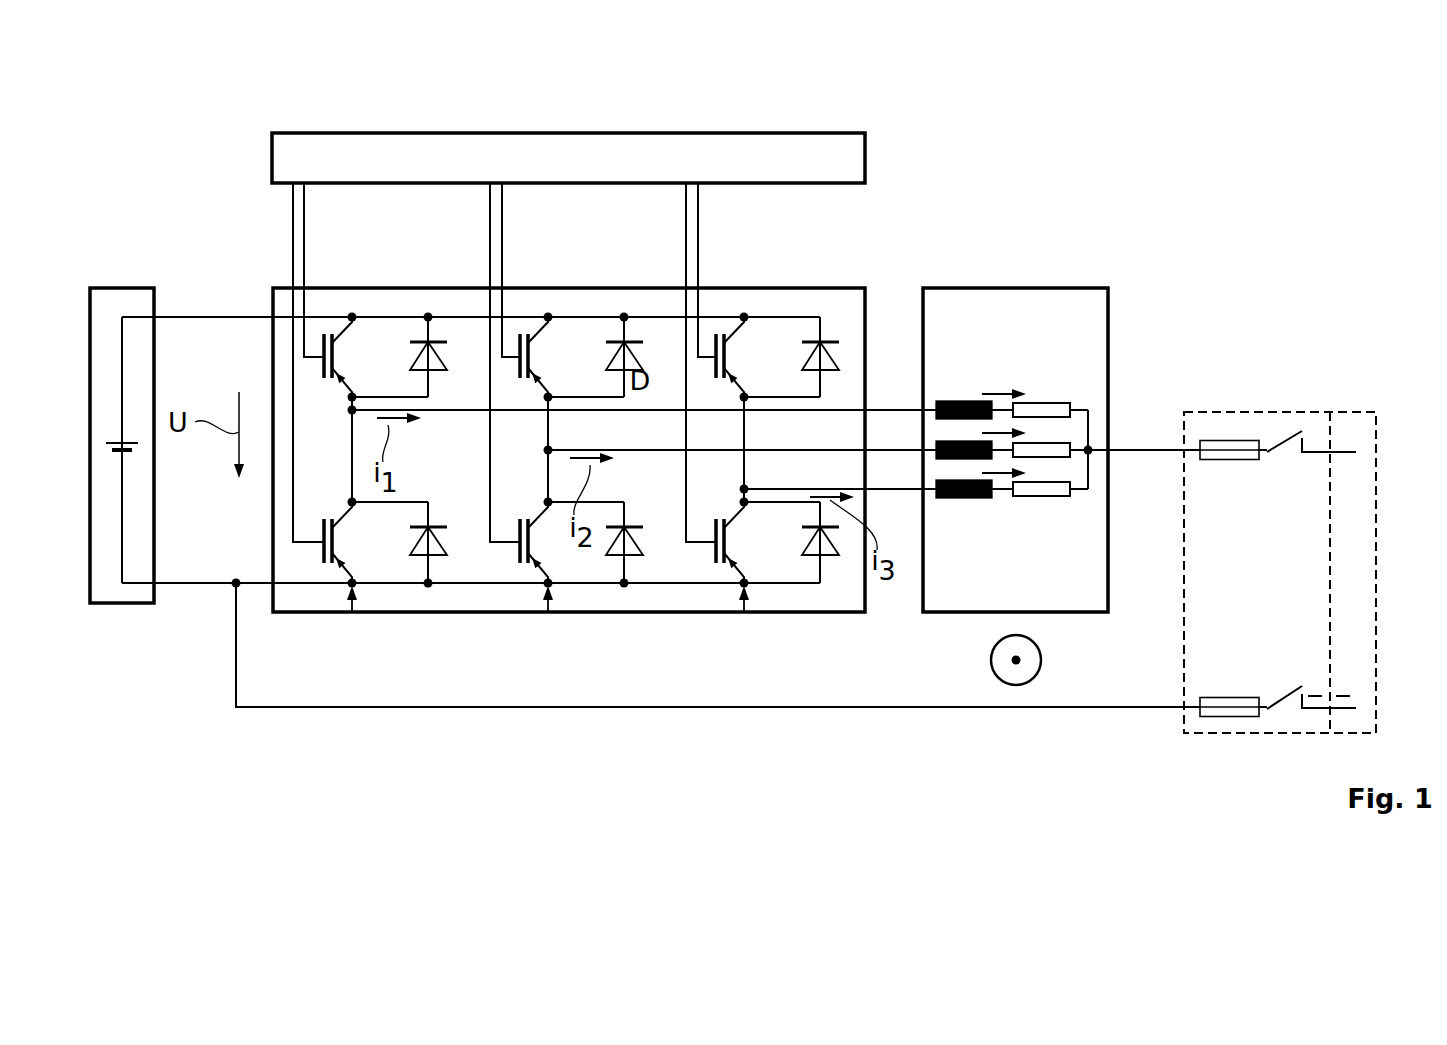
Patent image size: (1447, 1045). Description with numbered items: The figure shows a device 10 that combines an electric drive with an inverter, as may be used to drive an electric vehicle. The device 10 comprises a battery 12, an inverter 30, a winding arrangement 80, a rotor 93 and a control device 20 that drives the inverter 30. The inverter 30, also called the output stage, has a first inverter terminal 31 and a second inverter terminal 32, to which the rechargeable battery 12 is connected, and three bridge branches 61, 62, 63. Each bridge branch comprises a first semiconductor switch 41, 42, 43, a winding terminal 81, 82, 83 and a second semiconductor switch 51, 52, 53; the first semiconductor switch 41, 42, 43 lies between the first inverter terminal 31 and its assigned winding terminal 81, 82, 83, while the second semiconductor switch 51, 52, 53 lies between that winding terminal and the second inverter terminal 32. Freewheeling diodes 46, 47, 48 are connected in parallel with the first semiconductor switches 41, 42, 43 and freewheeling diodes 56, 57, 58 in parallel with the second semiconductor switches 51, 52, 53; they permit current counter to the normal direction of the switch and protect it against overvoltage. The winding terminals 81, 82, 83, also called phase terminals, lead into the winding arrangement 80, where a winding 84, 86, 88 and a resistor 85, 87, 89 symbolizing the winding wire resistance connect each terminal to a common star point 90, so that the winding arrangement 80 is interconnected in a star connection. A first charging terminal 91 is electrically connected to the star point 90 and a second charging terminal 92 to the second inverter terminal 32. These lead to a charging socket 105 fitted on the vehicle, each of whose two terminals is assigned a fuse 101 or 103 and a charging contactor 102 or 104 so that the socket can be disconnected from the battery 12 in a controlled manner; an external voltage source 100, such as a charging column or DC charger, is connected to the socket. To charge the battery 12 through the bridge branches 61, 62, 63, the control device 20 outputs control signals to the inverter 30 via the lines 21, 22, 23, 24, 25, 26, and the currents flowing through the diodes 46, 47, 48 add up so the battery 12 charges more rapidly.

The device 10 is at (172, 158).
The battery 12 is at (122, 603).
The control device 20 is at (568, 133).
The line 21 is at (293, 200).
The line 22 is at (304, 200).
The line 23 is at (490, 200).
The line 24 is at (502, 200).
The line 25 is at (686, 200).
The line 26 is at (698, 200).
The inverter 30 is at (843, 288).
The first inverter terminal 31 is at (193, 317).
The second inverter terminal 32 is at (200, 583).
The first semiconductor switch 41 is at (316, 342).
The first semiconductor switch 42 is at (512, 342).
The first semiconductor switch 43 is at (708, 342).
The freewheeling diode 46 is at (420, 342).
The freewheeling diode 47 is at (616, 342).
The freewheeling diode 48 is at (812, 342).
The second semiconductor switch 51 is at (318, 570).
The second semiconductor switch 52 is at (514, 570).
The second semiconductor switch 53 is at (710, 570).
The freewheeling diode 56 is at (422, 570).
The freewheeling diode 57 is at (618, 570).
The freewheeling diode 58 is at (814, 570).
The bridge branch 61 is at (352, 614).
The bridge branch 62 is at (548, 614).
The bridge branch 63 is at (744, 614).
The winding arrangement 80 is at (1010, 288).
The winding terminal 81 is at (352, 412).
The winding terminal 82 is at (548, 450).
The winding terminal 83 is at (744, 489).
The winding 84 is at (965, 401).
The resistor 85 is at (1045, 403).
The winding 86 is at (940, 445).
The resistor 87 is at (1070, 446).
The winding 88 is at (965, 498).
The resistor 89 is at (1045, 496).
The star point 90 is at (1090, 452).
The first charging terminal 91 is at (1155, 450).
The second charging terminal 92 is at (1122, 707).
The rotor 93 is at (1016, 685).
The voltage source 100 is at (1350, 412).
The fuse 101 is at (1222, 441).
The charging contactor 102 is at (1277, 445).
The fuse 103 is at (1225, 717).
The charging contactor 104 is at (1290, 702).
The charging socket 105 is at (1240, 412).